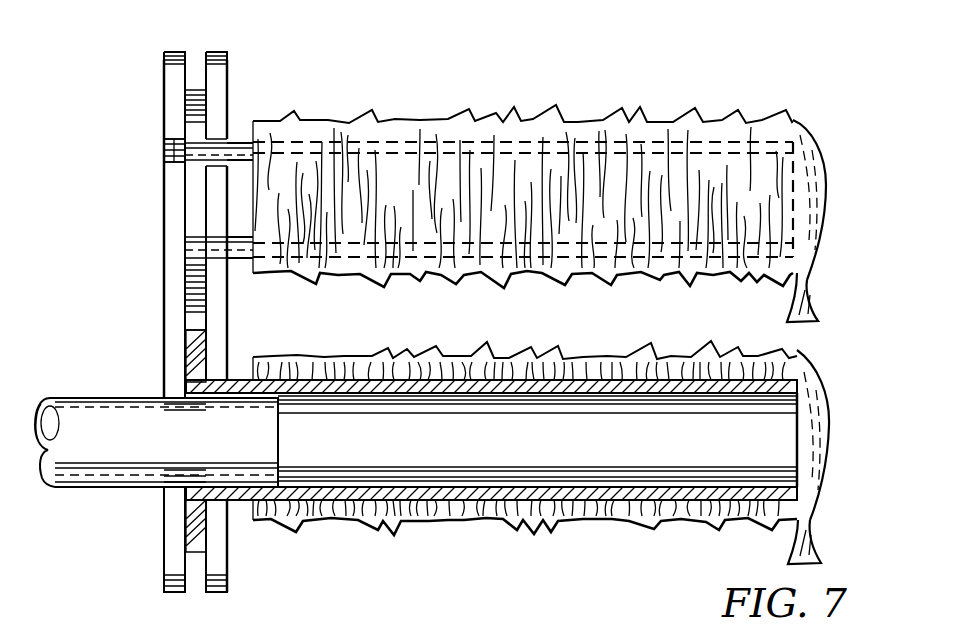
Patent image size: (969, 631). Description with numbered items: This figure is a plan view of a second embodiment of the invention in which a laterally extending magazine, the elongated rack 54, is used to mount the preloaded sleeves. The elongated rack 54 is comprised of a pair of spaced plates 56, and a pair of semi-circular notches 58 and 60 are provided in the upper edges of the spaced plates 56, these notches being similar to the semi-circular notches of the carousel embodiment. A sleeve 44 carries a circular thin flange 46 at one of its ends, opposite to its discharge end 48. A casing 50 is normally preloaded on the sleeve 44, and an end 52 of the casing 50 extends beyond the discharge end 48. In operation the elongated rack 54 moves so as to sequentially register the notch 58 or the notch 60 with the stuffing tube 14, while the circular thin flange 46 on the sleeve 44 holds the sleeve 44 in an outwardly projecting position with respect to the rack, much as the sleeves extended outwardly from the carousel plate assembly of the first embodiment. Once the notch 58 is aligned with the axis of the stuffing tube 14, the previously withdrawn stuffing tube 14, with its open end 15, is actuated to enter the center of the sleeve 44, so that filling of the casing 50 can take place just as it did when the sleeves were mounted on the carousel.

The stuffing tube 14 is at (95, 396).
The open end 15 is at (280, 425).
The sleeve 44 is at (556, 108).
The circular thin flange 46 is at (196, 332).
The discharge end 48 is at (798, 160).
The casing 50 is at (815, 215).
The end of the casing 52 is at (812, 290).
The elongated rack 54 is at (158, 60).
The spaced plates 56 is at (214, 52).
The semi-circular notch 58 is at (210, 475).
The semi-circular notch 60 is at (186, 140).